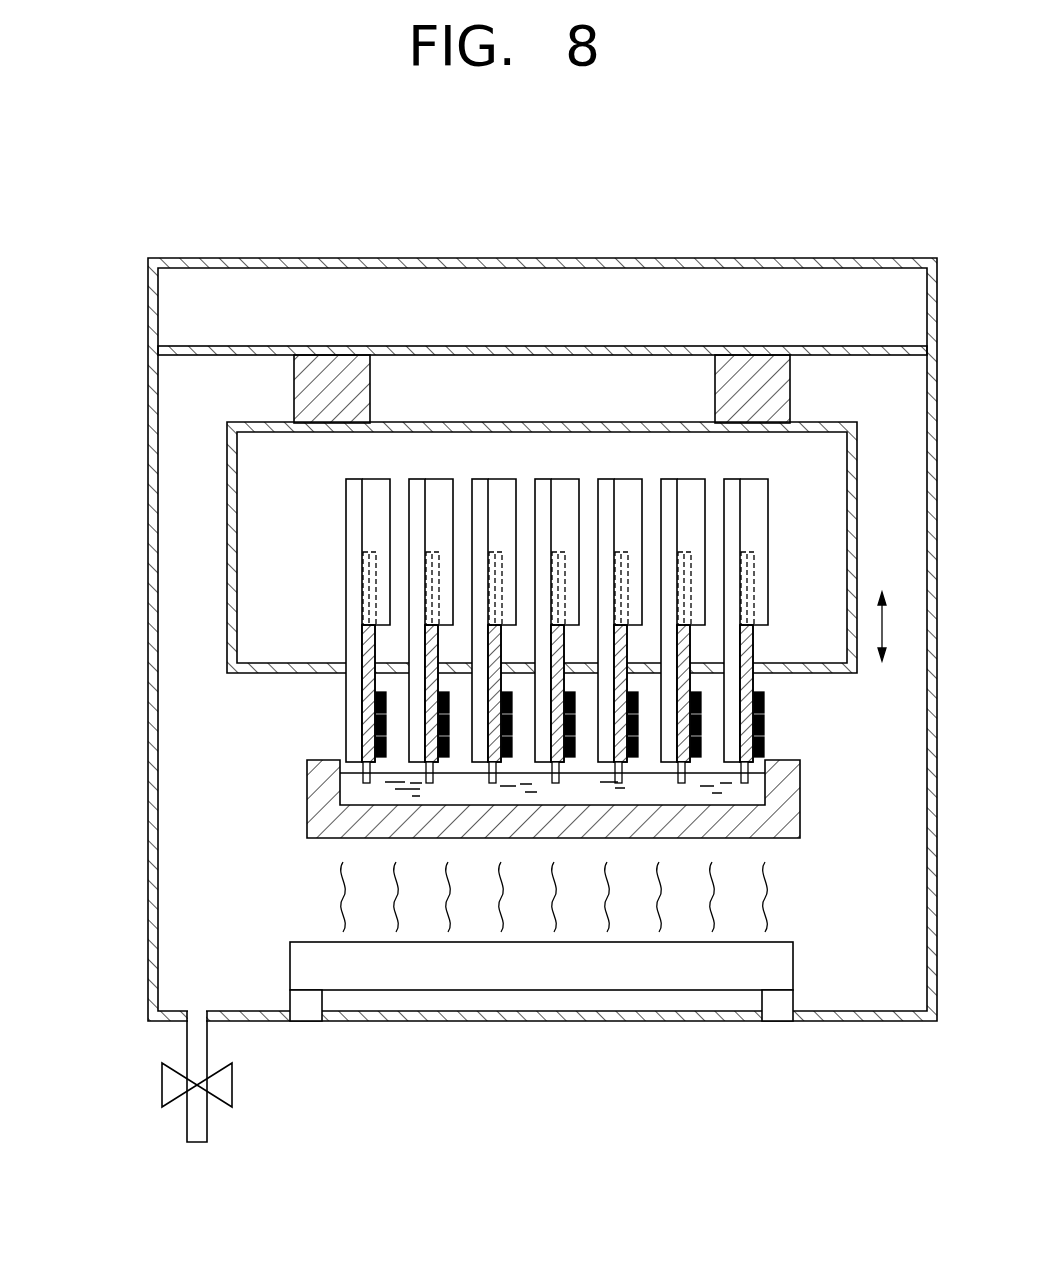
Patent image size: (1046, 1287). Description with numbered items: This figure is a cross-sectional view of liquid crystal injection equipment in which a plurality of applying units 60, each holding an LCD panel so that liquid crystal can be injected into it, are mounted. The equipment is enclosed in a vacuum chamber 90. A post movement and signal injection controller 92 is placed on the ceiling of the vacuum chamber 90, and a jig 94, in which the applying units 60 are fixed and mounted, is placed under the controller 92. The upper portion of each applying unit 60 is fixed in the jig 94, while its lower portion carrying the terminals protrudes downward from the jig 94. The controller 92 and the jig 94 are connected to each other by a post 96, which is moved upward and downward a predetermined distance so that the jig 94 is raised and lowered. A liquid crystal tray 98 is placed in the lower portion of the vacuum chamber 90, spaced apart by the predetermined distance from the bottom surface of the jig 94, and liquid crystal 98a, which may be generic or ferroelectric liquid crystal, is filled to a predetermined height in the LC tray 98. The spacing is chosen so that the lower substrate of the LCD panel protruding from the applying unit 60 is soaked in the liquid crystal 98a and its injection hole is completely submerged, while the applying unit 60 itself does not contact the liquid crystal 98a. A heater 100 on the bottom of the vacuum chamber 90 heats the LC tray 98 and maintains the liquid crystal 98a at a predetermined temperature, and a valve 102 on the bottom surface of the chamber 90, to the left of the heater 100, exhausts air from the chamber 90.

The vacuum chamber 90 is at (252, 258).
The post movement and signal injection controller 92 is at (548, 292).
The post 96 is at (300, 388).
The jig 94 is at (235, 550).
The applying unit 60 is at (338, 538).
The LC tray 98 is at (564, 799).
The liquid crystal 98a is at (752, 790).
The heater 100 is at (528, 972).
The valve 102 is at (162, 1085).